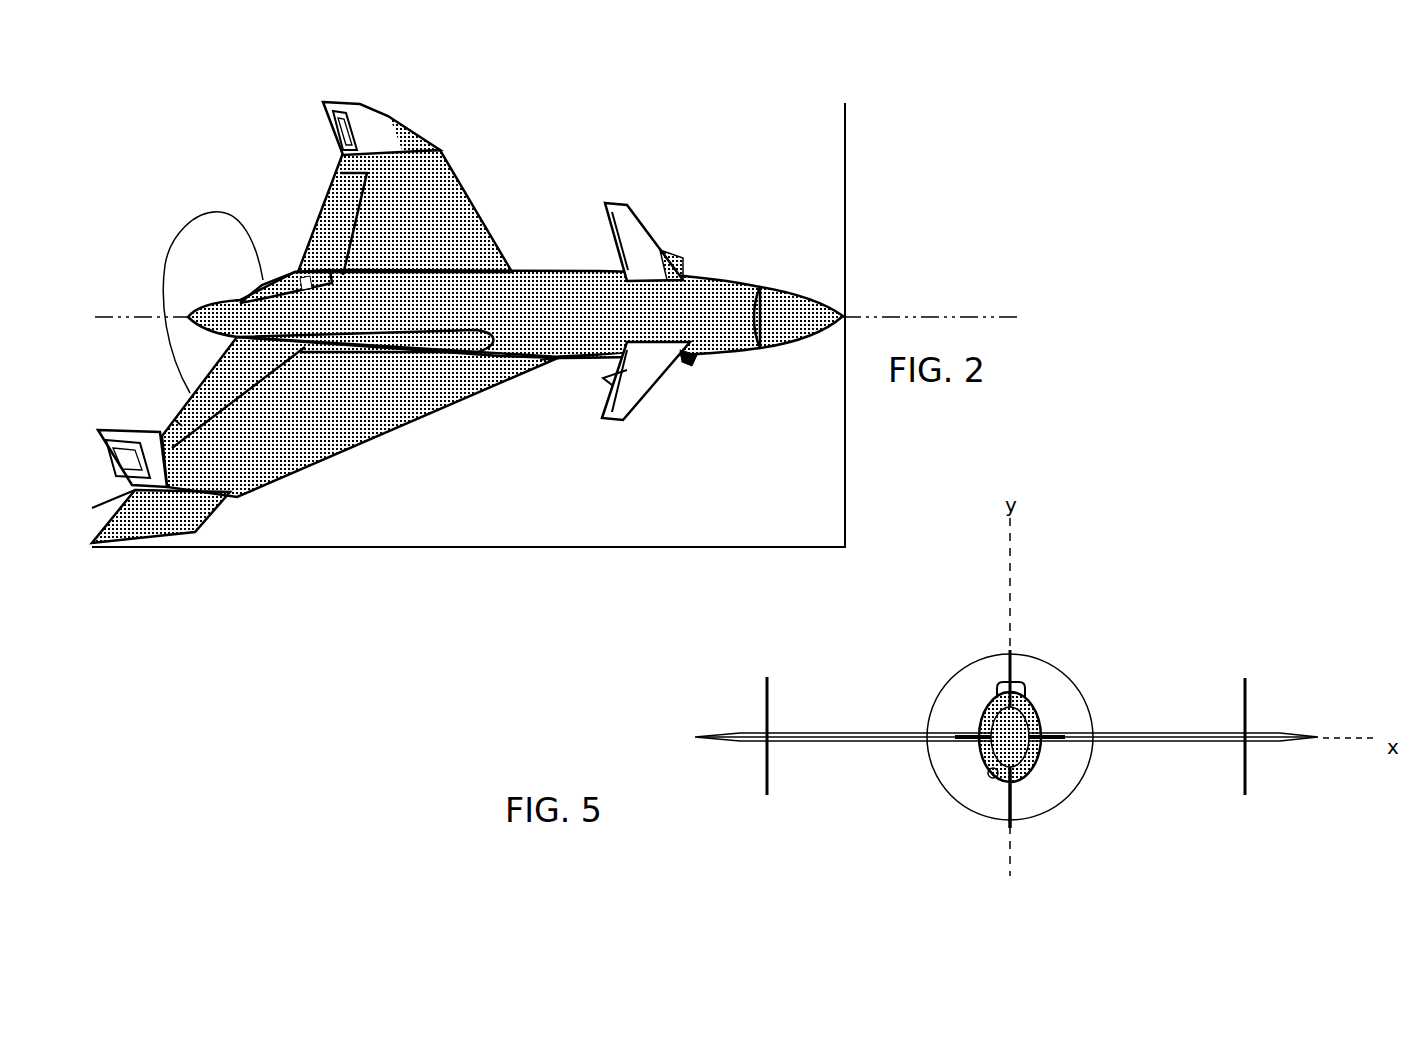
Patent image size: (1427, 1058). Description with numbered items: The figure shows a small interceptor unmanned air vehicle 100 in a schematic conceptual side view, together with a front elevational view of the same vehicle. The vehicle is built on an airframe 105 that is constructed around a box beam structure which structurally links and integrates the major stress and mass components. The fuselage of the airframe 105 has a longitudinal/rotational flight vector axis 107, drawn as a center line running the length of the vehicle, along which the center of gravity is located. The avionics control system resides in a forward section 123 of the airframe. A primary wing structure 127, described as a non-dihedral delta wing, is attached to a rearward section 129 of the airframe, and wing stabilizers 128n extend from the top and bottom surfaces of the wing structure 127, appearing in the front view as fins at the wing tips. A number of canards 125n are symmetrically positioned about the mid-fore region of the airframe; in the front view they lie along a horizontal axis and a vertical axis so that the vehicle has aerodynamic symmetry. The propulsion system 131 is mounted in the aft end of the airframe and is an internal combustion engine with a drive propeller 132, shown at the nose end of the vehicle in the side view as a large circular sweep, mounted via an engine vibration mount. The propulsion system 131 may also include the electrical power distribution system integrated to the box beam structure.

In FIG. 2, the small interceptor unmanned air vehicle 100 is at (690, 127).
In FIG. 2, the airframe 105 is at (520, 342).
In FIG. 2, the longitudinal/rotational flight vector axis 107 is at (586, 319).
In FIG. 2, the forward section 123 is at (733, 280).
In FIG. 2, the canards 125n is at (650, 360).
In FIG. 5, the canards 125n is at (1010, 788).
In FIG. 2, the primary wing structure 127 is at (387, 388).
In FIG. 2, the wing stabilizers 128n is at (383, 140).
In FIG. 5, the wing stabilizers 128n is at (1245, 760).
In FIG. 2, the rearward section 129 is at (340, 300).
In FIG. 2, the propulsion system 131 is at (268, 282).
In FIG. 2, the drive propeller 132 is at (175, 262).